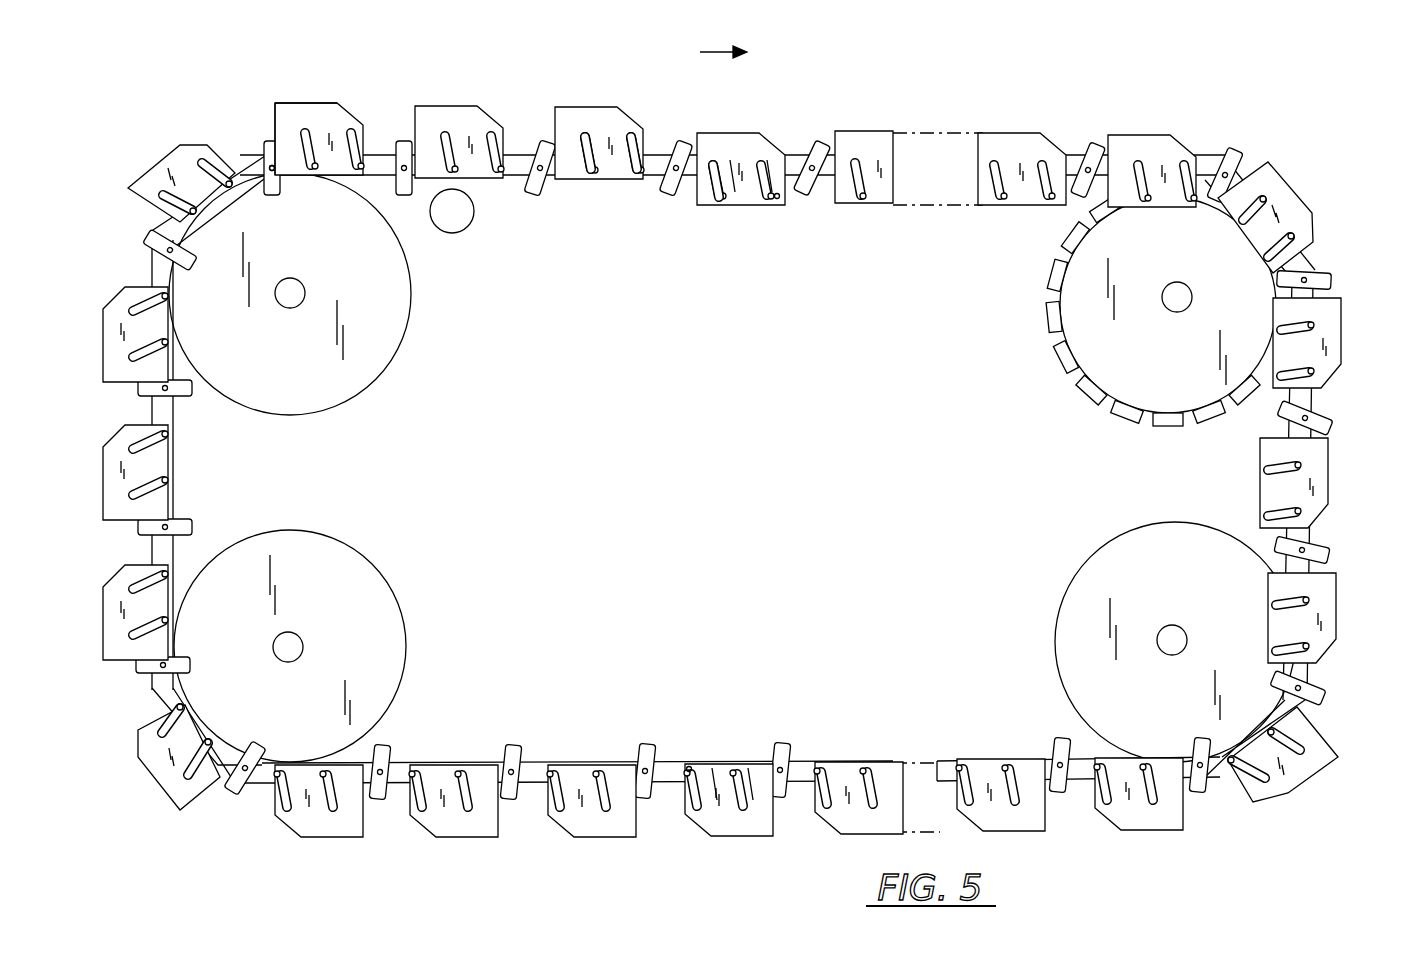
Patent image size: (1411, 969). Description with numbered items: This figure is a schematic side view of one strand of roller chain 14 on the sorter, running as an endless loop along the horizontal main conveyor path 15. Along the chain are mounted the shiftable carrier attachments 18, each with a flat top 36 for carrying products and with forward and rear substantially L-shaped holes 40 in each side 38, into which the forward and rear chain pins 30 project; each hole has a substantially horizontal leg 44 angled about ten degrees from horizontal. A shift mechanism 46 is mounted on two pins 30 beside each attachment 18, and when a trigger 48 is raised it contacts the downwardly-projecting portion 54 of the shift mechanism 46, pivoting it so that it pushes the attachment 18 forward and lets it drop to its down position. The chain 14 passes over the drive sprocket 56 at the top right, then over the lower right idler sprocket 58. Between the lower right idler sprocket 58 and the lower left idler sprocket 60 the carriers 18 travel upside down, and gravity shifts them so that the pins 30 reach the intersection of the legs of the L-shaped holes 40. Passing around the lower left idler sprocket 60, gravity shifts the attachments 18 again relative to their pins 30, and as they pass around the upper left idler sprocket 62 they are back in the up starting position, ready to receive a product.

The roller chain 14 is at (517, 150).
The main conveyor path 15 is at (700, 52).
The shiftable attachment 18 is at (343, 101).
The chain pin 30 is at (730, 193).
The flat top 36 is at (293, 105).
The side 38 is at (283, 113).
The L-shaped hole 40 is at (634, 135).
The horizontal leg 44 is at (777, 202).
The shift mechanism 46 is at (262, 148).
The trigger 48 is at (457, 233).
The downwardly-projecting portion 54 is at (274, 194).
The drive sprocket 56 is at (1062, 330).
The lower right idler sprocket 58 is at (1063, 592).
The lower left idler sprocket 60 is at (402, 608).
The upper left idler sprocket 62 is at (413, 343).